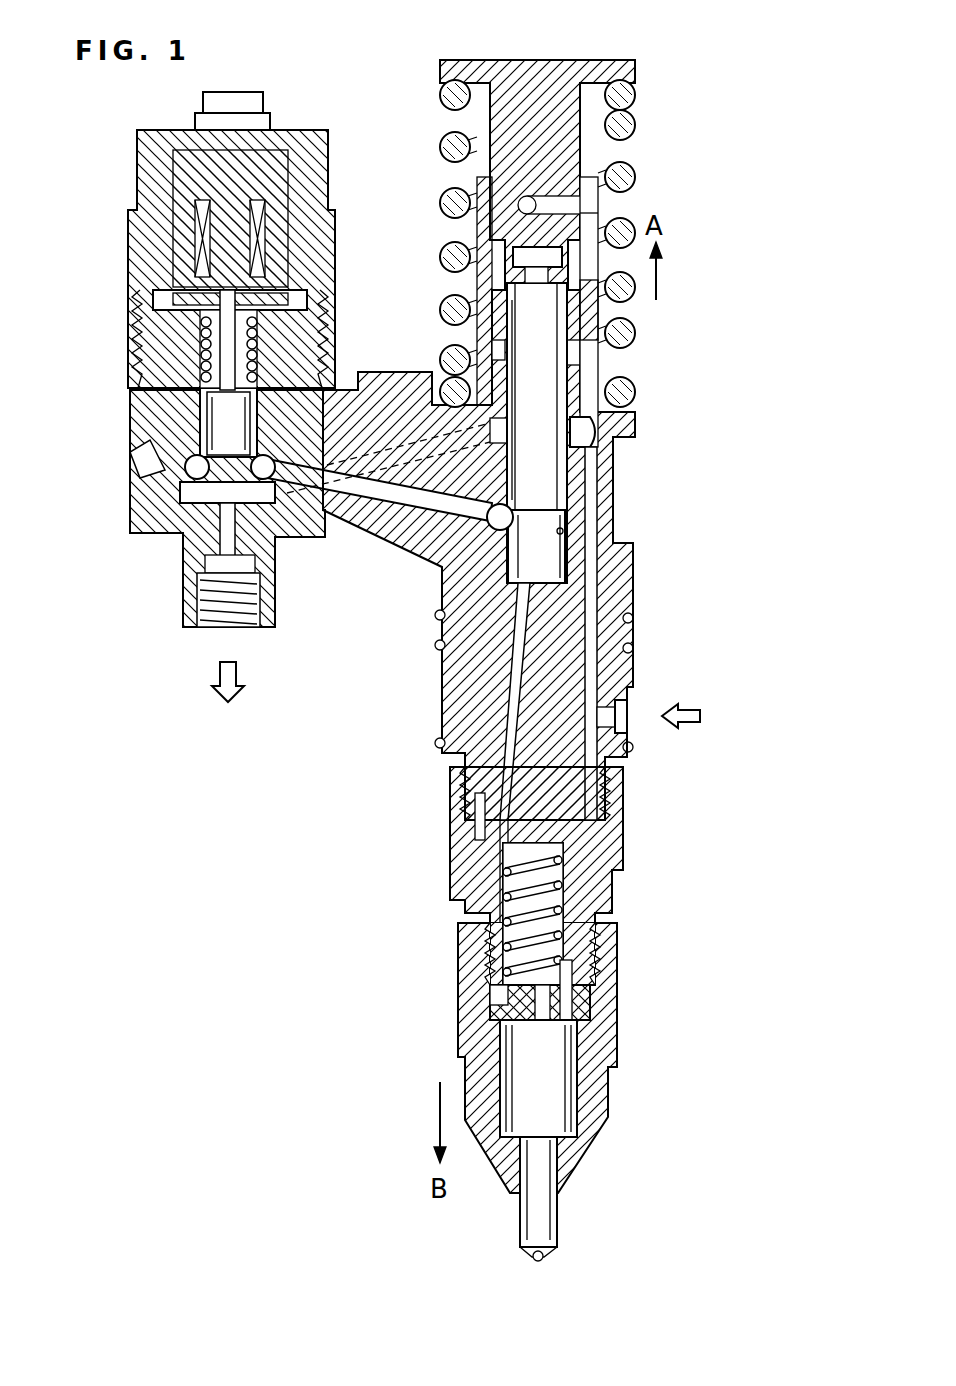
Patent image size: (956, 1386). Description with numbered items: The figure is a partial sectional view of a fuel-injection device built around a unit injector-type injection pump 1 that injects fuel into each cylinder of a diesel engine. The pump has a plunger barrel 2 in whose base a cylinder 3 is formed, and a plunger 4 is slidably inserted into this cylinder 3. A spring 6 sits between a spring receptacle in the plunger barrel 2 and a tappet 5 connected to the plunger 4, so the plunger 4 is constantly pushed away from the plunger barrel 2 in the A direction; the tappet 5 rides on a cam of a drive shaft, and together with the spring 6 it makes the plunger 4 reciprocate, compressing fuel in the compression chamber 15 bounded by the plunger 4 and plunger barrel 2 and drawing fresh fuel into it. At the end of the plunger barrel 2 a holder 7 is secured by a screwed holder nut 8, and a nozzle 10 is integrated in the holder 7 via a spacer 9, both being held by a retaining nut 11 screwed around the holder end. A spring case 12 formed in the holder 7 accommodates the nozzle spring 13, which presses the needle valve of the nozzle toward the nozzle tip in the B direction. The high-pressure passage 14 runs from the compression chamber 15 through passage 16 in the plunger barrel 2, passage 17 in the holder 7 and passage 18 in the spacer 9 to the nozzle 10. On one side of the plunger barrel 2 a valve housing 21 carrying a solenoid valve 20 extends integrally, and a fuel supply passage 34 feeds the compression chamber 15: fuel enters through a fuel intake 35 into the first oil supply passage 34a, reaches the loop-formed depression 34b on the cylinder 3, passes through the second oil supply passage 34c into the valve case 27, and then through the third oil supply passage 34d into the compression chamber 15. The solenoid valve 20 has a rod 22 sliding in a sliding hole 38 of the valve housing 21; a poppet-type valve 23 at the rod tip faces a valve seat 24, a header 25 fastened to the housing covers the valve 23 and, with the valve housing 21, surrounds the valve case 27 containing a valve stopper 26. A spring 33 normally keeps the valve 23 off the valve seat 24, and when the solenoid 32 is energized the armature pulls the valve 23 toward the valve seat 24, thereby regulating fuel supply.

The injection pump 1 is at (652, 558).
The plunger barrel 2 is at (610, 672).
The cylinder 3 is at (562, 531).
The plunger 4 is at (553, 463).
The tappet 5 is at (498, 70).
The spring 6 is at (623, 172).
The holder 7 is at (578, 888).
The holder nut 8 is at (618, 840).
The spacer 9 is at (566, 1008).
The nozzle 10 is at (557, 1092).
The retaining nut 11 is at (470, 1033).
The spring case 12 is at (575, 947).
The nozzle spring 13 is at (520, 942).
The high-pressure passage 14 is at (507, 724).
The compression chamber 15 is at (512, 560).
The passage 16 is at (517, 670).
The passage 17 is at (497, 876).
The passage 18 is at (490, 1000).
The solenoid valve 20 is at (293, 548).
The valve housing 21 is at (370, 388).
The rod 22 is at (205, 392).
The valve 23 is at (190, 491).
The valve seat 24 is at (186, 468).
The header 25 is at (282, 572).
The valve stopper 26 is at (205, 548).
The valve case 27 is at (226, 520).
The solenoid 32 is at (258, 210).
The spring 33 is at (200, 340).
The fuel supply passage 34 is at (600, 637).
The first oil supply passage 34a is at (587, 605).
The loop-formed depression 34b is at (586, 430).
The second oil supply passage 34c is at (425, 443).
The third oil supply passage 34d is at (394, 494).
The fuel intake 35 is at (628, 716).
The sliding hole 38 is at (212, 410).